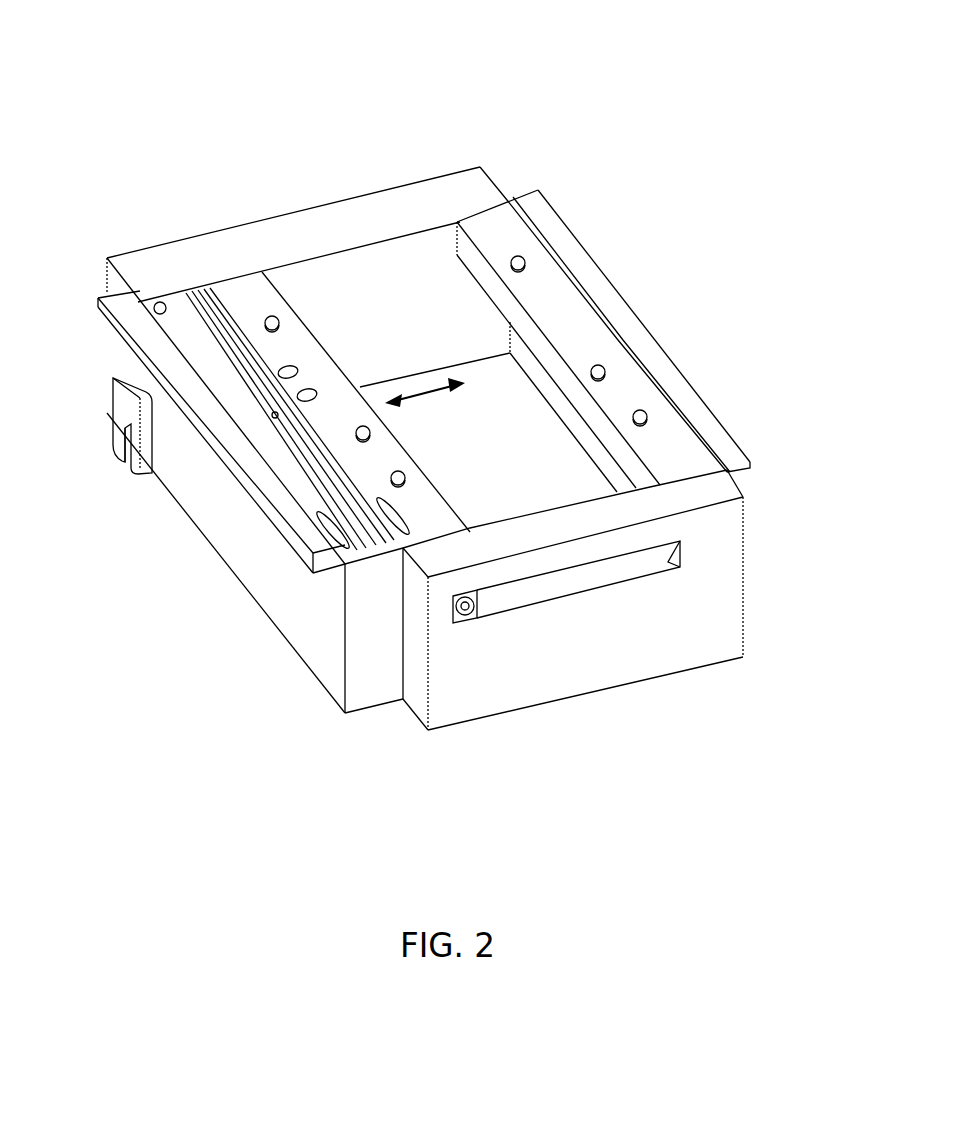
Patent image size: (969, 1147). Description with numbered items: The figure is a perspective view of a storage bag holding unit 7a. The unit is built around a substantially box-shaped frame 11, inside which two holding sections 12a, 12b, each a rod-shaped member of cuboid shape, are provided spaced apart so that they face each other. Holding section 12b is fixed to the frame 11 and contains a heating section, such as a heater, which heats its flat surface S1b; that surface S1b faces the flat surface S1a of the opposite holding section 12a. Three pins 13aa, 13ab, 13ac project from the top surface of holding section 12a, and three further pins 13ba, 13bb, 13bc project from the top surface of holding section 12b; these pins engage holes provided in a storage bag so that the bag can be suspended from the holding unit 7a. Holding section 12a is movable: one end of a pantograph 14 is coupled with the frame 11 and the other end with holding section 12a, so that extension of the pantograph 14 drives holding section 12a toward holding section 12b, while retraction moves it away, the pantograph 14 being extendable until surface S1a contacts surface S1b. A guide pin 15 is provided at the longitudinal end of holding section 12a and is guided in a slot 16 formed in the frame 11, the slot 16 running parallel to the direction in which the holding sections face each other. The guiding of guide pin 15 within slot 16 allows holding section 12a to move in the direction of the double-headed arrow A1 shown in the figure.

The storage bag holding unit 7a is at (300, 62).
The frame 11 is at (270, 233).
The holding section 12a is at (240, 297).
The holding section 12b is at (492, 233).
The surface S1a is at (312, 333).
The surface S1b is at (493, 283).
The pin 13aa is at (266, 327).
The pin 13ab is at (358, 438).
The pin 13ac is at (392, 481).
The pin 13ba is at (525, 262).
The pin 13bb is at (605, 370).
The pin 13bc is at (647, 416).
The pantograph 14 is at (285, 421).
The guide pin 15 is at (465, 616).
The slot 16 is at (593, 573).
The double-headed arrow A1 is at (432, 389).